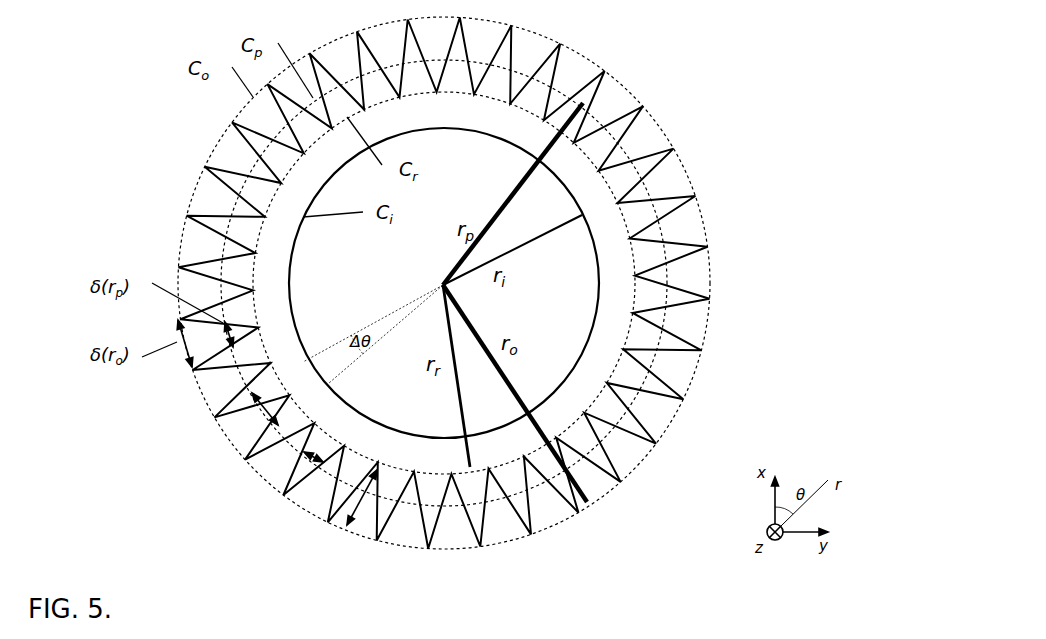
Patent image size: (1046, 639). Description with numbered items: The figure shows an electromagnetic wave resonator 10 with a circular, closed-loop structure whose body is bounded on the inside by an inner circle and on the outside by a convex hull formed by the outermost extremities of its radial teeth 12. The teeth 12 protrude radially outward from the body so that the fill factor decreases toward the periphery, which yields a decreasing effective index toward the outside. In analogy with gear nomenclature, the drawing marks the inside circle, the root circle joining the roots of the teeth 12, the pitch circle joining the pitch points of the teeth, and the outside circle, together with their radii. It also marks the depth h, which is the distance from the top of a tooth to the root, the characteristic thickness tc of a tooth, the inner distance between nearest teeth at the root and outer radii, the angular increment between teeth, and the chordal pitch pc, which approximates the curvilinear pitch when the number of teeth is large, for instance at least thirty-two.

The electromagnetic wave resonator 10 is at (717, 132).
The radial teeth 12 is at (642, 212).
The chordal pitch pc is at (260, 413).
The characteristic thickness tc is at (303, 468).
The depth h is at (358, 507).